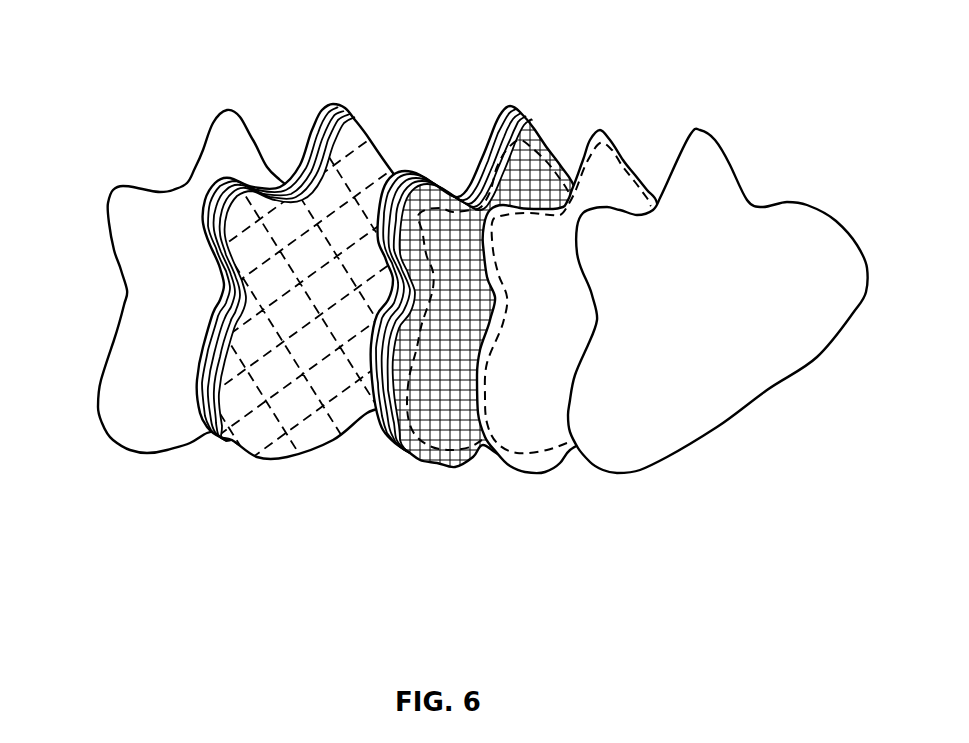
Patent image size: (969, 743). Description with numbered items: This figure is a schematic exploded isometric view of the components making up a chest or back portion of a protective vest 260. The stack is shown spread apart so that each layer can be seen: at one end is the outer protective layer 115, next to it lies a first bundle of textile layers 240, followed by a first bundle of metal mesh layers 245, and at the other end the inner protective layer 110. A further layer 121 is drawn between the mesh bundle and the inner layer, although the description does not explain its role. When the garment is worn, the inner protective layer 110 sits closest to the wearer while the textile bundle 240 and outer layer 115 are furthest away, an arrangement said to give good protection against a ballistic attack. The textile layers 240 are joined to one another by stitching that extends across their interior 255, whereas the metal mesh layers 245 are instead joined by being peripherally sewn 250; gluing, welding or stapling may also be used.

The inner protective layer 110 is at (698, 128).
The outer protective layer 115 is at (122, 292).
The tooth-receiving region 121 is at (597, 128).
The first bundle of textile layers 240 is at (303, 342).
The first bundle of metal mesh layers 245 is at (476, 127).
The peripheral sewing 250 is at (437, 460).
The interior stitching 255 is at (242, 445).
The protective vest 260 is at (434, 342).